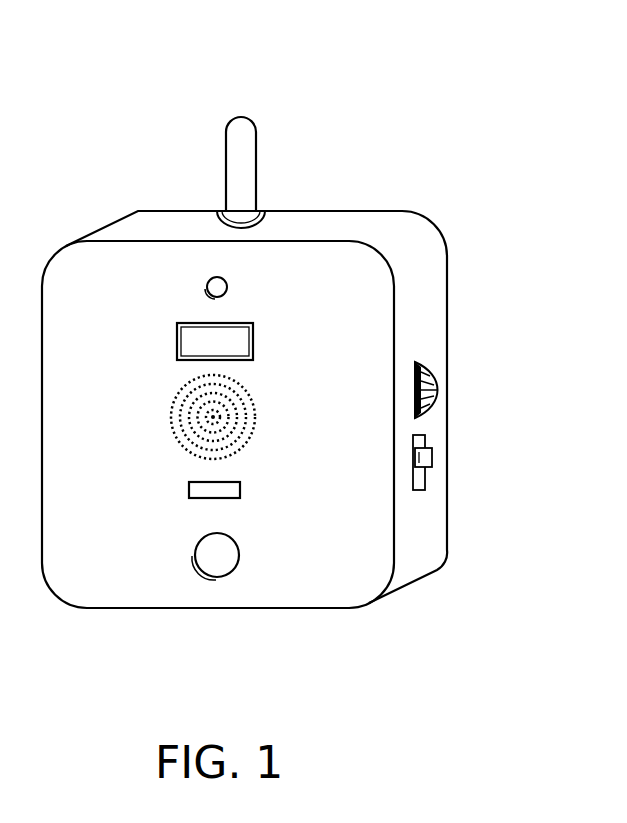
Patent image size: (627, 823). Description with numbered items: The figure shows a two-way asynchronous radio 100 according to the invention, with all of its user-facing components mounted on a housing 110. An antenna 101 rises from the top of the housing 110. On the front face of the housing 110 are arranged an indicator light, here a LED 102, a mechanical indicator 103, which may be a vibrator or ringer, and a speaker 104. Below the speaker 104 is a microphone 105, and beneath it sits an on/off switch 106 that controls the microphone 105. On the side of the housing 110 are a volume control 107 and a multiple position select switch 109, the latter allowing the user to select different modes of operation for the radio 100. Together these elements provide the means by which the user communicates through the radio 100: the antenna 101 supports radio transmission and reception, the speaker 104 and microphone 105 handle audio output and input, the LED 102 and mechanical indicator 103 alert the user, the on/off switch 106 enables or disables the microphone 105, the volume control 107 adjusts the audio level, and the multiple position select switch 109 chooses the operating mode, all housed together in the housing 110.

The two-way asynchronous radio 100 is at (246, 685).
The antenna 101 is at (245, 118).
The LED 102 is at (218, 277).
The mechanical indicator 103 is at (255, 335).
The speaker 104 is at (256, 408).
The microphone 105 is at (242, 488).
The on/off switch 106 is at (240, 553).
The volume control 107 is at (437, 383).
The multiple position select switch 109 is at (437, 440).
The housing 110 is at (437, 515).